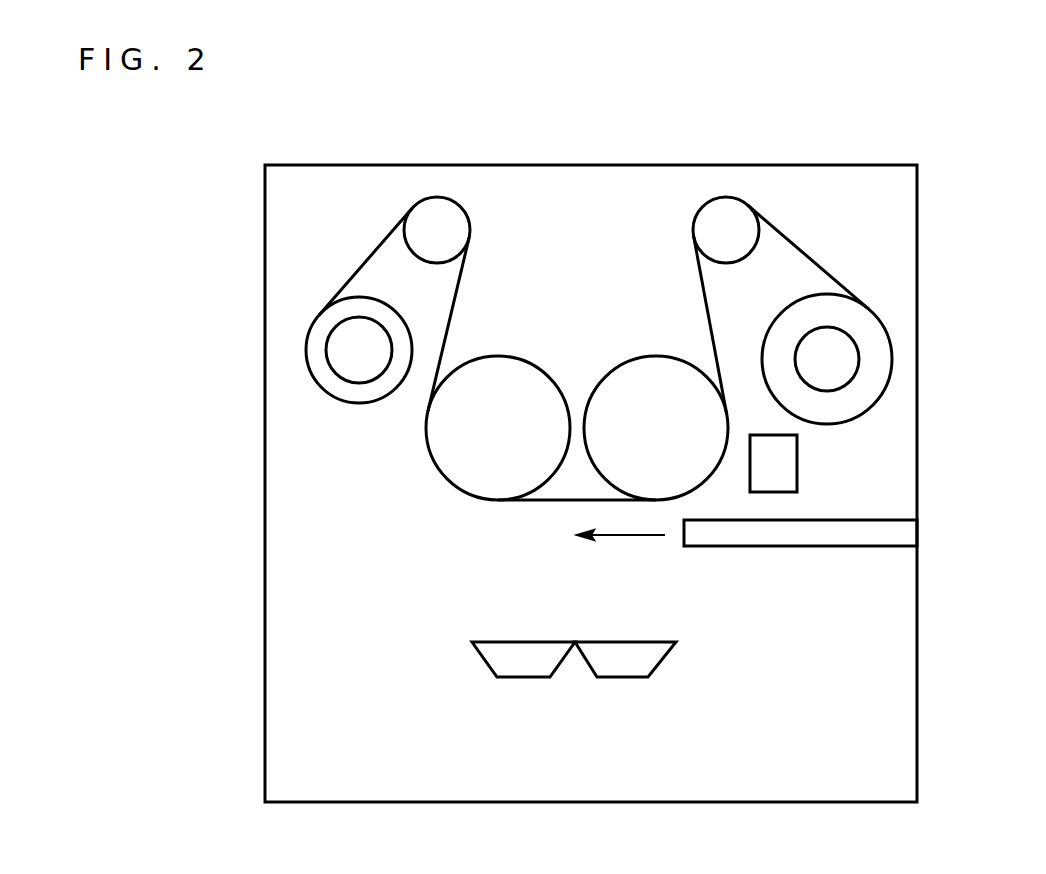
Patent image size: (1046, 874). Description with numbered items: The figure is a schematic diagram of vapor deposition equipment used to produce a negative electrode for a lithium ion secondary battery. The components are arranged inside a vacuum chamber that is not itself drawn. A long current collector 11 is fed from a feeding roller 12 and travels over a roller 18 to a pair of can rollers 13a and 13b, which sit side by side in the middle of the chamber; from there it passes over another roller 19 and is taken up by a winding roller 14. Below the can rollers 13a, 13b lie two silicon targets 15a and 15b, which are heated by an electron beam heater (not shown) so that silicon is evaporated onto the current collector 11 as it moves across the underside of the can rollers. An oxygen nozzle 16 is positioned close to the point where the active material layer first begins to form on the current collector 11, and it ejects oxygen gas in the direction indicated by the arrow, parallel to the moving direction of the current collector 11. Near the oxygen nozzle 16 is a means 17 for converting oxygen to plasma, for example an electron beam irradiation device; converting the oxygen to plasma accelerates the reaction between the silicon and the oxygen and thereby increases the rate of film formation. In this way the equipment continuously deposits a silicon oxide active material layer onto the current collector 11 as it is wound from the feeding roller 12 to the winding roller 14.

The current collector 11 is at (713, 333).
The feeding roller 12 is at (835, 350).
The can roller 13a is at (635, 388).
The can roller 13b is at (498, 381).
The winding roller 14 is at (350, 370).
The silicon target 15a is at (630, 667).
The silicon target 15b is at (524, 667).
The oxygen nozzle 16 is at (787, 535).
The means for converting oxygen to plasma 17 is at (782, 470).
The roller 18 is at (724, 215).
The roller 19 is at (437, 212).